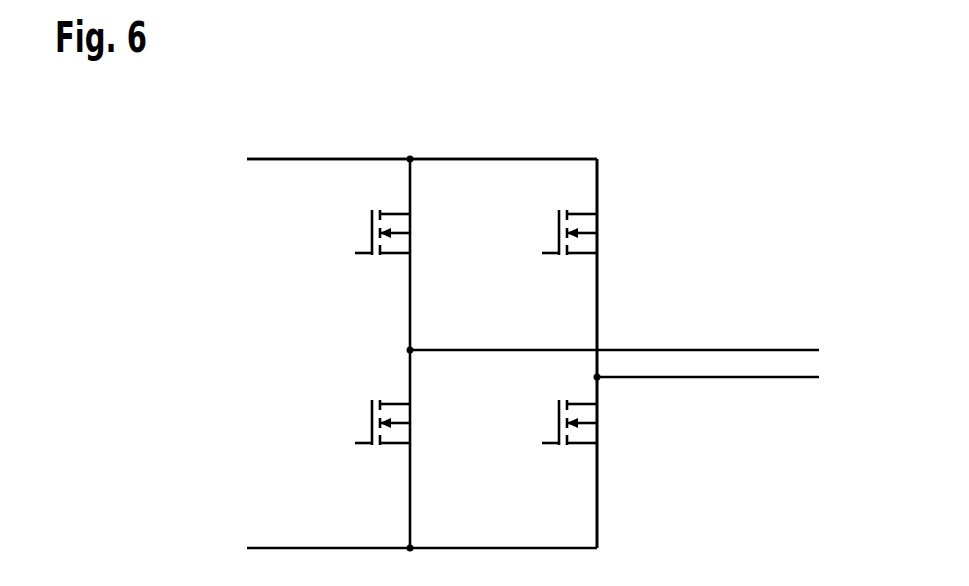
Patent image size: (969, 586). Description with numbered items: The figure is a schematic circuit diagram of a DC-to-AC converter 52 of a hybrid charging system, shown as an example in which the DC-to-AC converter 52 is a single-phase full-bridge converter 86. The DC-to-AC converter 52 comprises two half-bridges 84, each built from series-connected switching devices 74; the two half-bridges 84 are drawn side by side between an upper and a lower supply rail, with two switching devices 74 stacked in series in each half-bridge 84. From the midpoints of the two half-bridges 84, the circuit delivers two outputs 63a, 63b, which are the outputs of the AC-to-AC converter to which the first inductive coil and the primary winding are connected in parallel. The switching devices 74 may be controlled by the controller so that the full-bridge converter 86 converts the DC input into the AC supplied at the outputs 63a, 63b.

The DC-to-AC converter 52 is at (704, 150).
The half-bridge 84 is at (417, 135).
The single-phase full-bridge converter 86 is at (662, 138).
The switching device 74 is at (390, 256).
The output 63a is at (718, 348).
The output 63b is at (716, 379).